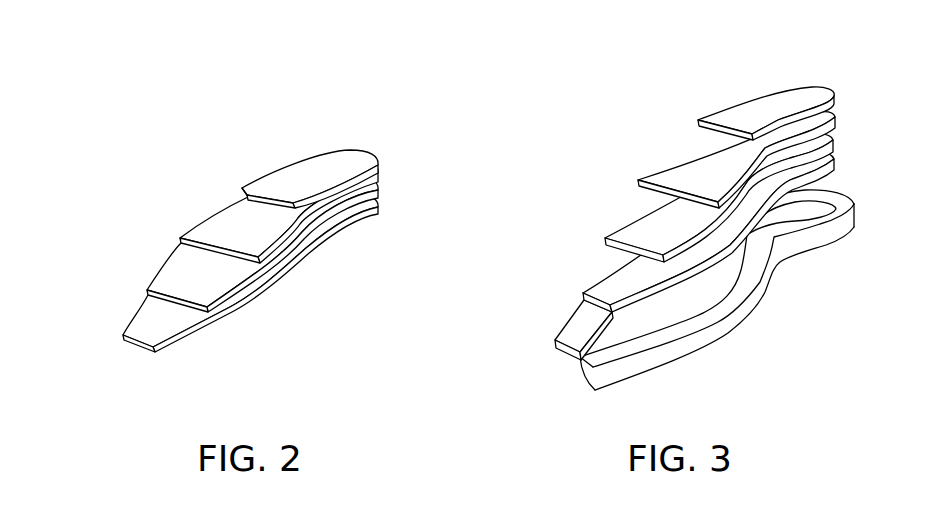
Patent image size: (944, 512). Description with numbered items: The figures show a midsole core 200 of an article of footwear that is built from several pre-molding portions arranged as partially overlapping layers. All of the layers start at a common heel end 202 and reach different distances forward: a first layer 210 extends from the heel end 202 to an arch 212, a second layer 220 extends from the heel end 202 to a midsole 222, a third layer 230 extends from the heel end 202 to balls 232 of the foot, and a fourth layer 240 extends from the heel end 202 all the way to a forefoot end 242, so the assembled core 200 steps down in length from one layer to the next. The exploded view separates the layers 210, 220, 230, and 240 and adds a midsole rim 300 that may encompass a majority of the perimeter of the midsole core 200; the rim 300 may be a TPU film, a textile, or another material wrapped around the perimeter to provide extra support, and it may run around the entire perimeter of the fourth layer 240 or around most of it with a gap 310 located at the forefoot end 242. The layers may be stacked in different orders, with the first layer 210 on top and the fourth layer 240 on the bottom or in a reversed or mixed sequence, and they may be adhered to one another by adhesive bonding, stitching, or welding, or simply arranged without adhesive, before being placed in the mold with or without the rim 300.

In FIG. 2, the midsole core 200 is at (248, 244).
In FIG. 2, the heel end 202 is at (380, 170).
In FIG. 2, the first layer 210 is at (305, 151).
In FIG. 3, the first layer 210 is at (802, 100).
In FIG. 2, the arch 212 is at (243, 190).
In FIG. 2, the second layer 220 is at (244, 225).
In FIG. 3, the second layer 220 is at (680, 174).
In FIG. 2, the midsole 222 is at (182, 240).
In FIG. 2, the third layer 230 is at (225, 263).
In FIG. 3, the third layer 230 is at (630, 237).
In FIG. 2, the balls of foot 232 is at (147, 290).
In FIG. 2, the fourth layer 240 is at (211, 294).
In FIG. 3, the fourth layer 240 is at (597, 285).
In FIG. 2, the forefoot end 242 is at (123, 335).
In FIG. 3, the midsole rim 300 is at (674, 297).
In FIG. 3, the gap 310 is at (575, 358).